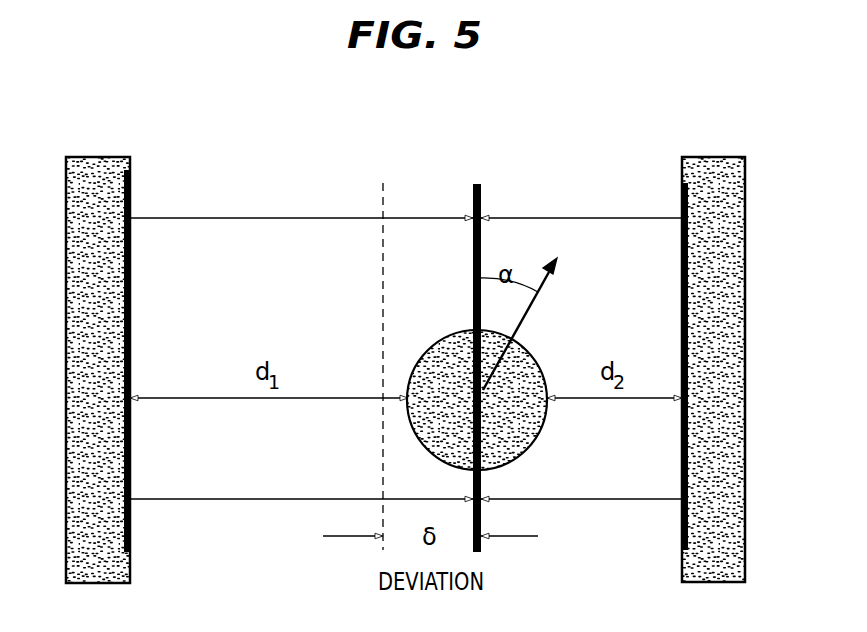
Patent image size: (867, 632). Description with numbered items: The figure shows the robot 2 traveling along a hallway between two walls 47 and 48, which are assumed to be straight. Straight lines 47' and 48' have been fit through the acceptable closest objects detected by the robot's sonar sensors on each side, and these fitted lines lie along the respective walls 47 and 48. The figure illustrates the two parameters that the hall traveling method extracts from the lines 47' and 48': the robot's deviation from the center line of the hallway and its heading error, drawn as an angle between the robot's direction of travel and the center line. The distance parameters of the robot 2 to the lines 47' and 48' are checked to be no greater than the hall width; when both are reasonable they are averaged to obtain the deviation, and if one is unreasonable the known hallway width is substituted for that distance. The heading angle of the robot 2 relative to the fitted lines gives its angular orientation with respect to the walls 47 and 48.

The wall 47 is at (149, 368).
The straight line 47' is at (172, 361).
The wall 48 is at (663, 365).
The straight line 48' is at (635, 366).
The robot 2 is at (530, 447).